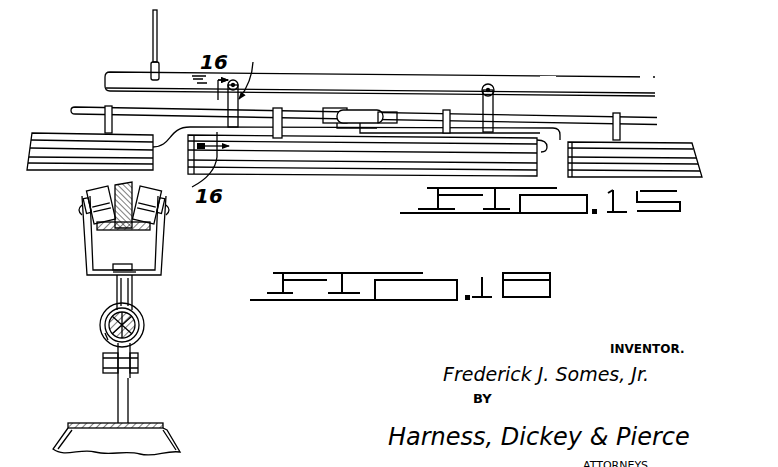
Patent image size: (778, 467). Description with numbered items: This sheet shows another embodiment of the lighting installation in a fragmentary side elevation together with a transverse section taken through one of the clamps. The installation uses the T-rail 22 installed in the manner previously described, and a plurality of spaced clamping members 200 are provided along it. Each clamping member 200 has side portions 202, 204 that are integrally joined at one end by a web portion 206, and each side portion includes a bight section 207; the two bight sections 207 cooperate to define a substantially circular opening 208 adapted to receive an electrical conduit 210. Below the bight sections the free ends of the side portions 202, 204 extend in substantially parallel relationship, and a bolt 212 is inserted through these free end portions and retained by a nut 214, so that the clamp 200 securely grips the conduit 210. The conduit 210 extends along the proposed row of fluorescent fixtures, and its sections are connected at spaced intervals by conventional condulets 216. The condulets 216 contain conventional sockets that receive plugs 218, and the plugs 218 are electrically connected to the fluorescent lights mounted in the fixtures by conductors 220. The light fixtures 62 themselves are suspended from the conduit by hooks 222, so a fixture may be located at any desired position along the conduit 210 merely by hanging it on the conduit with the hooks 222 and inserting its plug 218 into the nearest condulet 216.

In FIG. 16, the T-rail 22 is at (120, 200).
In FIG. 15, the light fixtures 62 is at (387, 158).
In FIG. 15, the clamping members 200 is at (250, 74).
In FIG. 16, the clamping members 200 is at (136, 303).
In FIG. 16, the side portion 202 is at (113, 298).
In FIG. 16, the side portion 204 is at (134, 289).
In FIG. 16, the web portion 206 is at (115, 281).
In FIG. 16, the bight section 207 is at (103, 333).
In FIG. 16, the circular opening 208 is at (143, 322).
In FIG. 15, the electrical conduit 210 is at (428, 114).
In FIG. 16, the electrical conduit 210 is at (140, 340).
In FIG. 16, the bolt 212 is at (138, 363).
In FIG. 16, the nut 214 is at (103, 365).
In FIG. 15, the condulets 216 is at (347, 110).
In FIG. 15, the plugs 218 is at (383, 112).
In FIG. 15, the conductors 220 is at (545, 143).
In FIG. 15, the hooks 222 is at (448, 110).
In FIG. 16, the hooks 222 is at (127, 404).